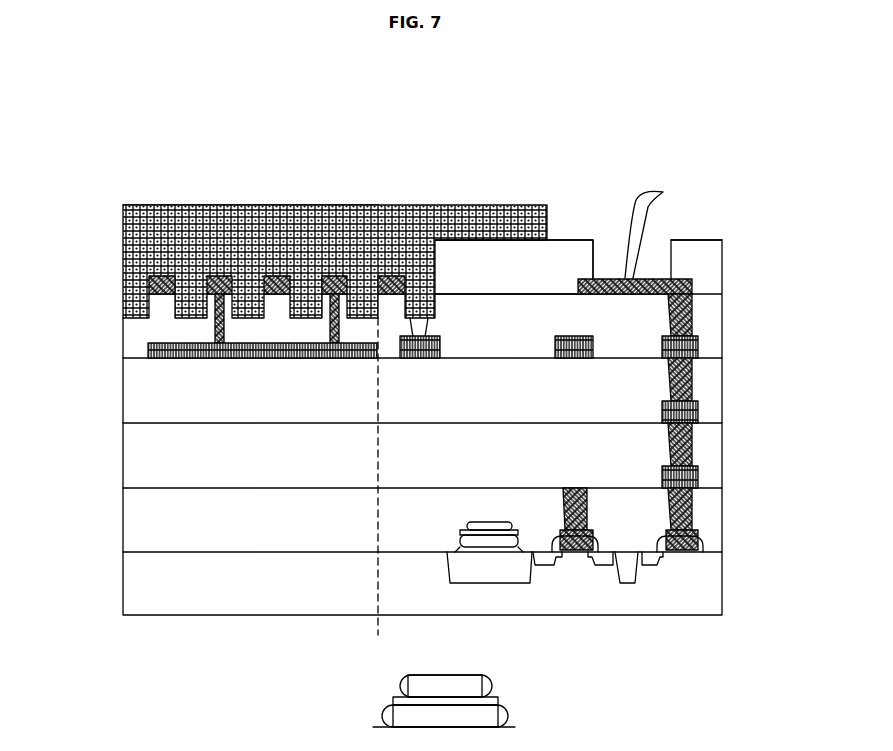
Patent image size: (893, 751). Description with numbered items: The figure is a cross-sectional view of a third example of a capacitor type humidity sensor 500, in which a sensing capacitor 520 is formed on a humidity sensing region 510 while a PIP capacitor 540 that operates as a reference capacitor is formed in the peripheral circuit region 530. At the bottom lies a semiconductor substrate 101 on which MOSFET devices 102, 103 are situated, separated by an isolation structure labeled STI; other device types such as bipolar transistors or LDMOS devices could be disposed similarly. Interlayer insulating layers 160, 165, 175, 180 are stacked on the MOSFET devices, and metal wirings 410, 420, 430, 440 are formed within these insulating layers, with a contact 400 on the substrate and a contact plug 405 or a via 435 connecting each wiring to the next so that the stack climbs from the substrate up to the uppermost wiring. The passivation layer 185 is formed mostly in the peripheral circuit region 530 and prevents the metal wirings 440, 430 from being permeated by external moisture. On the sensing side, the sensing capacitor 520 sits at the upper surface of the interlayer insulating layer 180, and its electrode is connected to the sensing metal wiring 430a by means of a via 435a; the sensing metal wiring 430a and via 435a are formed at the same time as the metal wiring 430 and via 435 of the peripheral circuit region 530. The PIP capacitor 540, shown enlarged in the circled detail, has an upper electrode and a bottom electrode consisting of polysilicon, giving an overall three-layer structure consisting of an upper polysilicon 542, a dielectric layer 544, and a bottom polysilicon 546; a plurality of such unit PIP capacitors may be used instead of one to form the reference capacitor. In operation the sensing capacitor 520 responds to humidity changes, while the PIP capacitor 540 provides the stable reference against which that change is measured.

The capacitor type humidity sensor 500 is at (437, 88).
The humidity sensing region 510 is at (272, 140).
The peripheral circuit region 530 is at (609, 140).
The sensing capacitor 520 is at (160, 276).
The interlayer insulating layer 180 is at (503, 332).
The passivation layer 185 is at (563, 280).
The metal wiring 440 is at (693, 283).
The via 435 is at (693, 314).
The metal wiring 430 is at (680, 346).
The metal wiring 420 is at (688, 410).
The metal wiring 410 is at (688, 474).
The contact plug 405 is at (692, 503).
The contact 400 is at (690, 543).
The via 435a is at (215, 326).
The sensing metal wiring 430a is at (150, 350).
The interlayer insulating layer 175 is at (160, 396).
The interlayer insulating layer 165 is at (148, 458).
The interlayer insulating layer 160 is at (143, 522).
The semiconductor substrate 101 is at (690, 587).
The MOSFET device 102 is at (573, 552).
The MOSFET device 103 is at (683, 552).
The shallow trench isolation STI is at (628, 580).
The PIP capacitor 540 is at (446, 545).
The upper polysilicon 542 is at (490, 683).
The dielectric layer 544 is at (485, 700).
The bottom polysilicon 546 is at (485, 717).